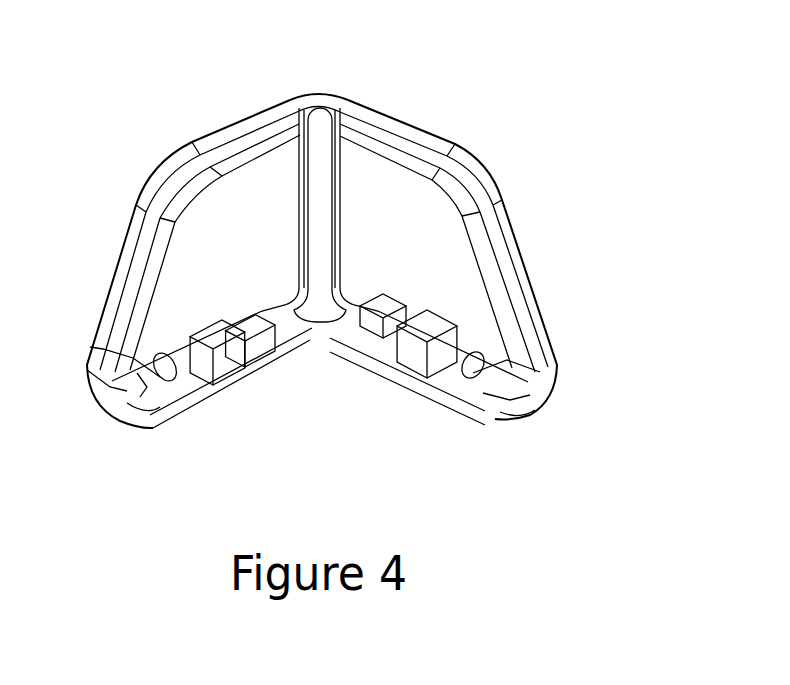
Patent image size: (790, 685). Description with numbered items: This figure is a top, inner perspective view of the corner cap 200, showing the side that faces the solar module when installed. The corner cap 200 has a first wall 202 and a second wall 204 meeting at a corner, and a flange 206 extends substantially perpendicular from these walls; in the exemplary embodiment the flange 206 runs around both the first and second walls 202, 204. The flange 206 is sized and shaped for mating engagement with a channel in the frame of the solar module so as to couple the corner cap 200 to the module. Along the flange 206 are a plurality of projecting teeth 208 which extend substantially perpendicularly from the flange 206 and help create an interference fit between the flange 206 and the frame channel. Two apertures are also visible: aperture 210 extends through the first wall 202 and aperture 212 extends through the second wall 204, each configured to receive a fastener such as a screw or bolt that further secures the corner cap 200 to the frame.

The corner cap 200 is at (178, 86).
The first wall 202 is at (210, 413).
The second wall 204 is at (420, 420).
The flange 206 is at (407, 360).
The projecting teeth 208 is at (392, 331).
The aperture 210 is at (176, 385).
The aperture 212 is at (462, 386).